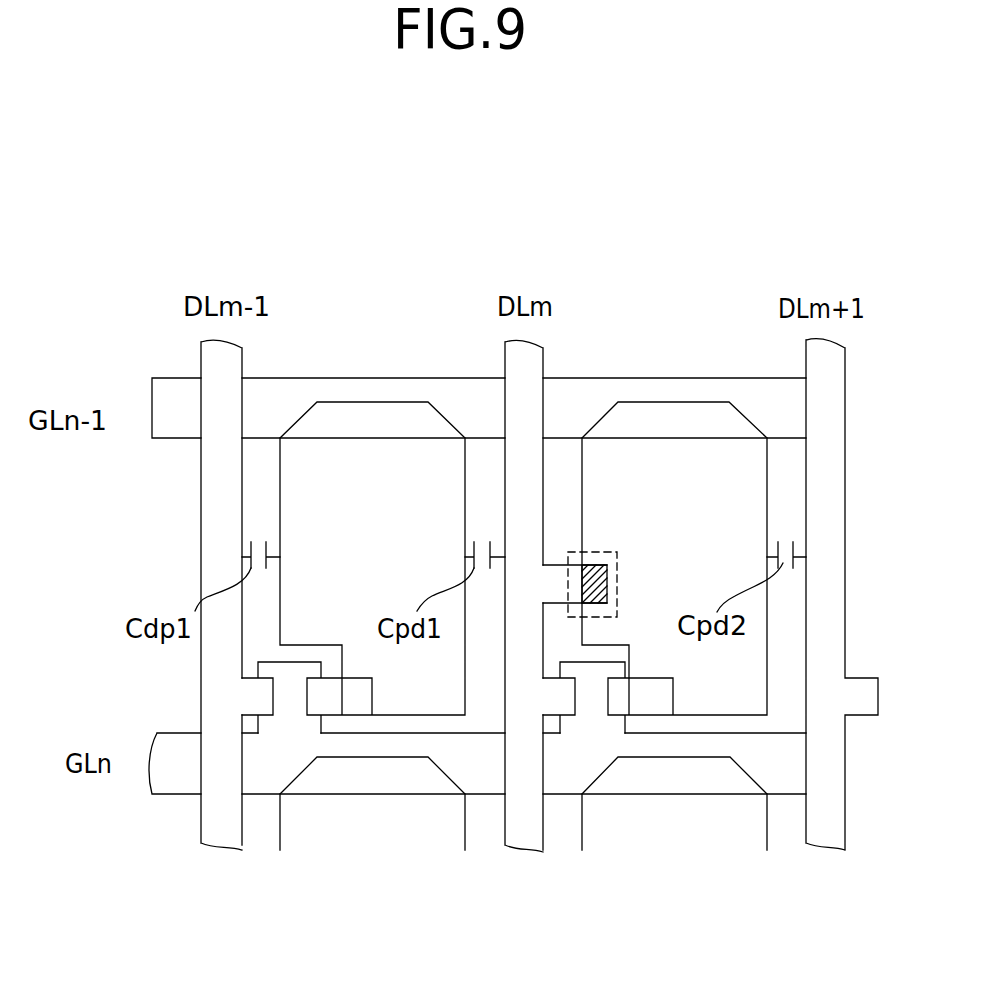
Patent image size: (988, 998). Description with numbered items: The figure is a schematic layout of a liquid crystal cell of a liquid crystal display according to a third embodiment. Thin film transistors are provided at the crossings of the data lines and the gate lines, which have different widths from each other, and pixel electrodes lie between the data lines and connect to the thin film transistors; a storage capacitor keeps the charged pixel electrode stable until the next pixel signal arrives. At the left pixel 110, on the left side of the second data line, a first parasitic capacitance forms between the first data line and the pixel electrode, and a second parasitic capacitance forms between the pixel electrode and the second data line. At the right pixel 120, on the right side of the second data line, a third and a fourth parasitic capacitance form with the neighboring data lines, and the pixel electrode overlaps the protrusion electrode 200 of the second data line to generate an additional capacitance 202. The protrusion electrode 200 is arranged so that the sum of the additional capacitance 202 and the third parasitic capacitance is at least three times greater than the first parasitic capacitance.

The left pixel 110 is at (367, 359).
The right pixel 120 is at (675, 359).
The protrusion electrode 200 is at (552, 573).
The additional capacitance 202 is at (617, 590).